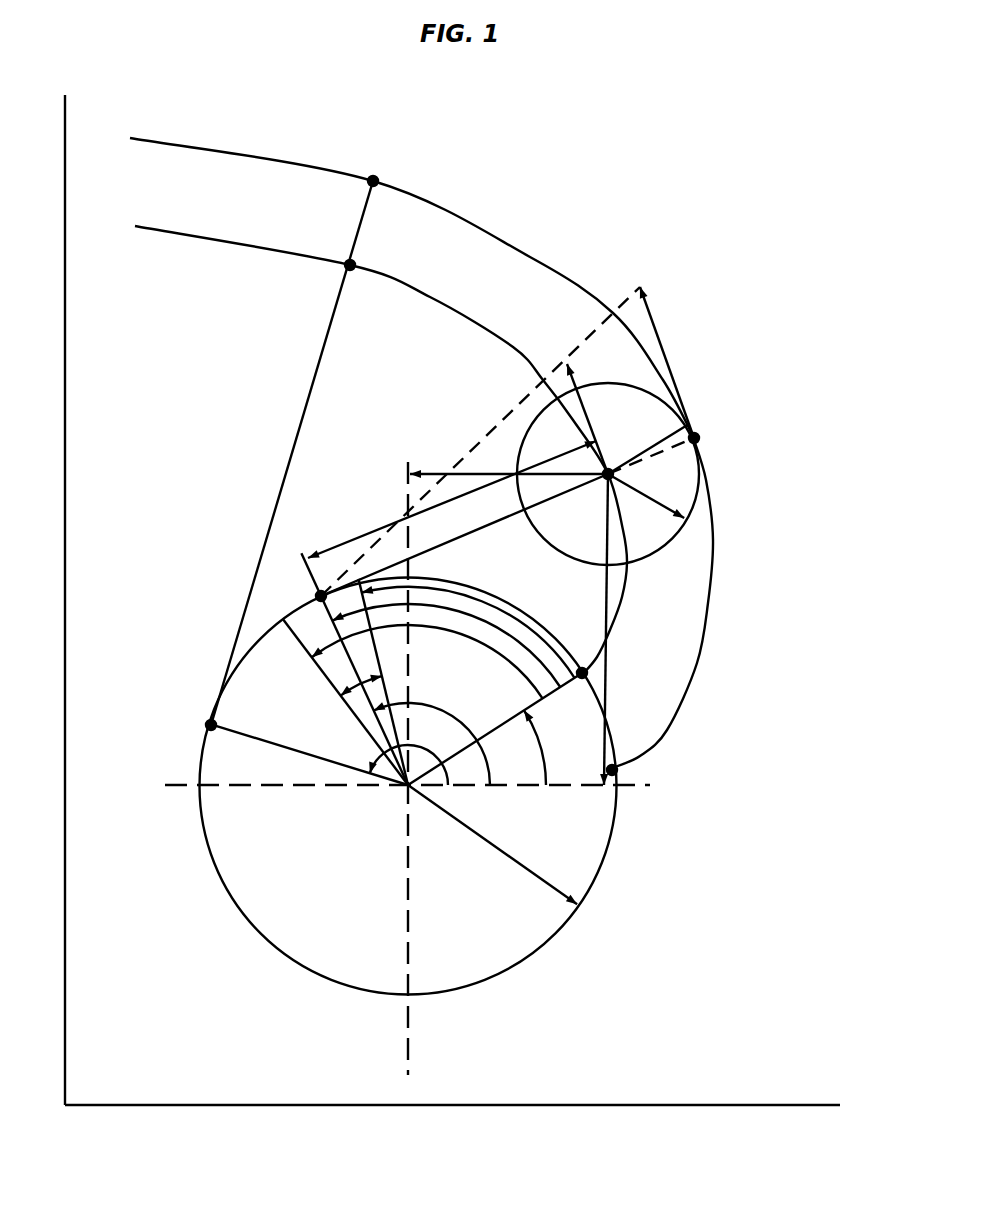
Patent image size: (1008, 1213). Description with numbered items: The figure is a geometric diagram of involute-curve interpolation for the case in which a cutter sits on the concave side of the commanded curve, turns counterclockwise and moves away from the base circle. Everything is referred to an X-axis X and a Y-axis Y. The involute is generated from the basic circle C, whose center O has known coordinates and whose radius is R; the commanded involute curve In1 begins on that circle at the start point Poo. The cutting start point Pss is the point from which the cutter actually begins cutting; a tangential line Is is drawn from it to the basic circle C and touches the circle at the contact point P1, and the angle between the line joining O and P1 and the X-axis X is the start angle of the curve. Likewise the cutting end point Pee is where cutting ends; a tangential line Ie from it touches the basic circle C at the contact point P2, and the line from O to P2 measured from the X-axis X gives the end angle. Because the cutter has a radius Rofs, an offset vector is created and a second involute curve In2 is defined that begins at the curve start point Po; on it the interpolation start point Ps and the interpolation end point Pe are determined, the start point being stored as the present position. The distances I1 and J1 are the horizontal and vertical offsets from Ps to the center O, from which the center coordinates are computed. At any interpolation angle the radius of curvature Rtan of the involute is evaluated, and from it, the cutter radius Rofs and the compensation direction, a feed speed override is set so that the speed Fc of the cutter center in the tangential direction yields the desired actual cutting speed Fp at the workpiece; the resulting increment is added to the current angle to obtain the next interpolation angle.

The X-axis X is at (463, 1108).
The Y-axis Y is at (63, 587).
The involute curve In1 is at (217, 142).
The offset involute curve In2 is at (238, 236).
The tangential line λe Ie is at (310, 390).
The cutting end point Pee is at (375, 180).
The interpolation end point Pe is at (352, 264).
The actual cutting speed Fp is at (656, 333).
The cutter center tangential speed Fc is at (572, 378).
The cutter radius Rofs is at (655, 492).
The interpolation start point Ps is at (681, 418).
The cutting start point Pss is at (696, 438).
The X-direction distance to center I1 is at (448, 474).
The radius of curvature Rtan is at (340, 545).
The tangential line λs Is is at (480, 530).
The Y-direction distance to center J1 is at (612, 606).
The basic circle C is at (482, 983).
The center of basic circle O is at (407, 786).
The radius of basic circle R is at (492, 844).
The contact point of tangential line λs P1 is at (320, 595).
The contact point of tangential line λe P2 is at (208, 725).
The curve start point Po is at (583, 675).
The start point of involute curve Poo is at (613, 770).